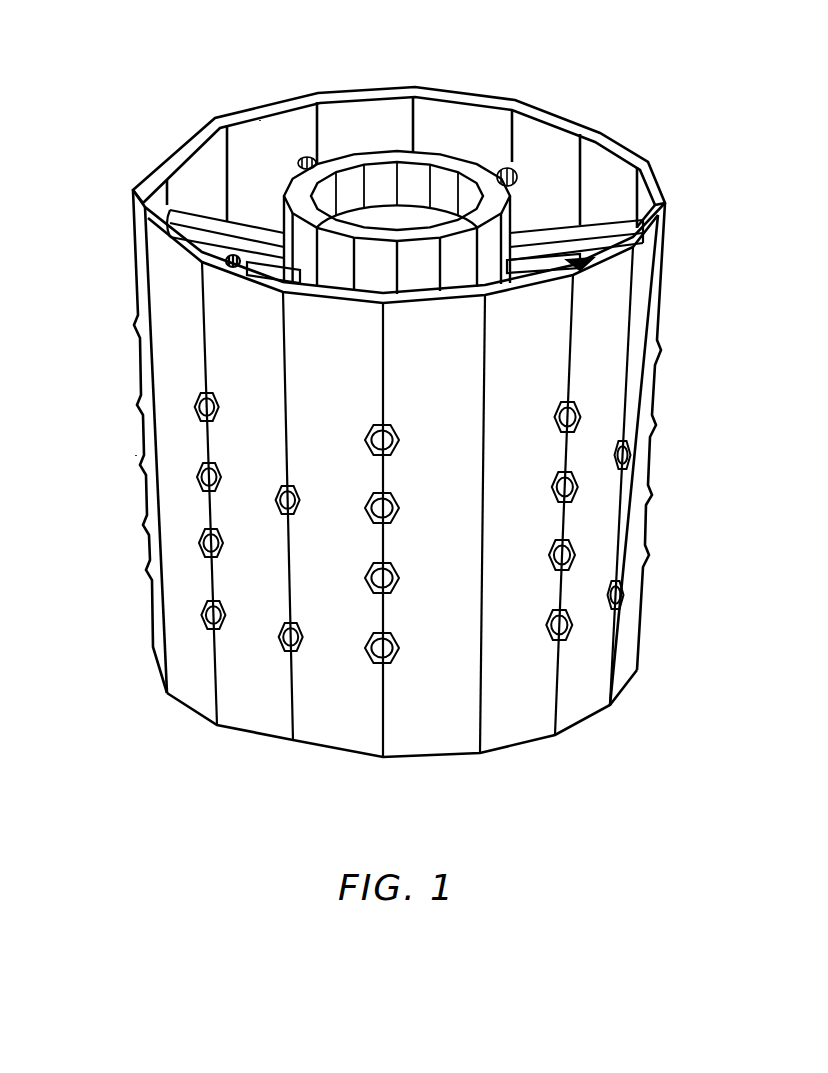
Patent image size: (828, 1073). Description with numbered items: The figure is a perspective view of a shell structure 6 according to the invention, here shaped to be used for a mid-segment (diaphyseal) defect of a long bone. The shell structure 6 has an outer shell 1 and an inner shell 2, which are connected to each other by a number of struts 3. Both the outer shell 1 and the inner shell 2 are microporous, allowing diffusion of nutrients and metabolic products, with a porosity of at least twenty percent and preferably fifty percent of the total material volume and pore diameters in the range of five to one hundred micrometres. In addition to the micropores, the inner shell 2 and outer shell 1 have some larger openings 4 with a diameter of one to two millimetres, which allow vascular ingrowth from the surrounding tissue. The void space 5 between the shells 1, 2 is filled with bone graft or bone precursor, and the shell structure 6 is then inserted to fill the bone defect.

The outer shell 1 is at (573, 157).
The inner shell 2 is at (420, 197).
The struts 3 is at (168, 206).
The larger openings 4 is at (573, 548).
The void space 5 is at (273, 150).
The shell structure 6 is at (118, 449).